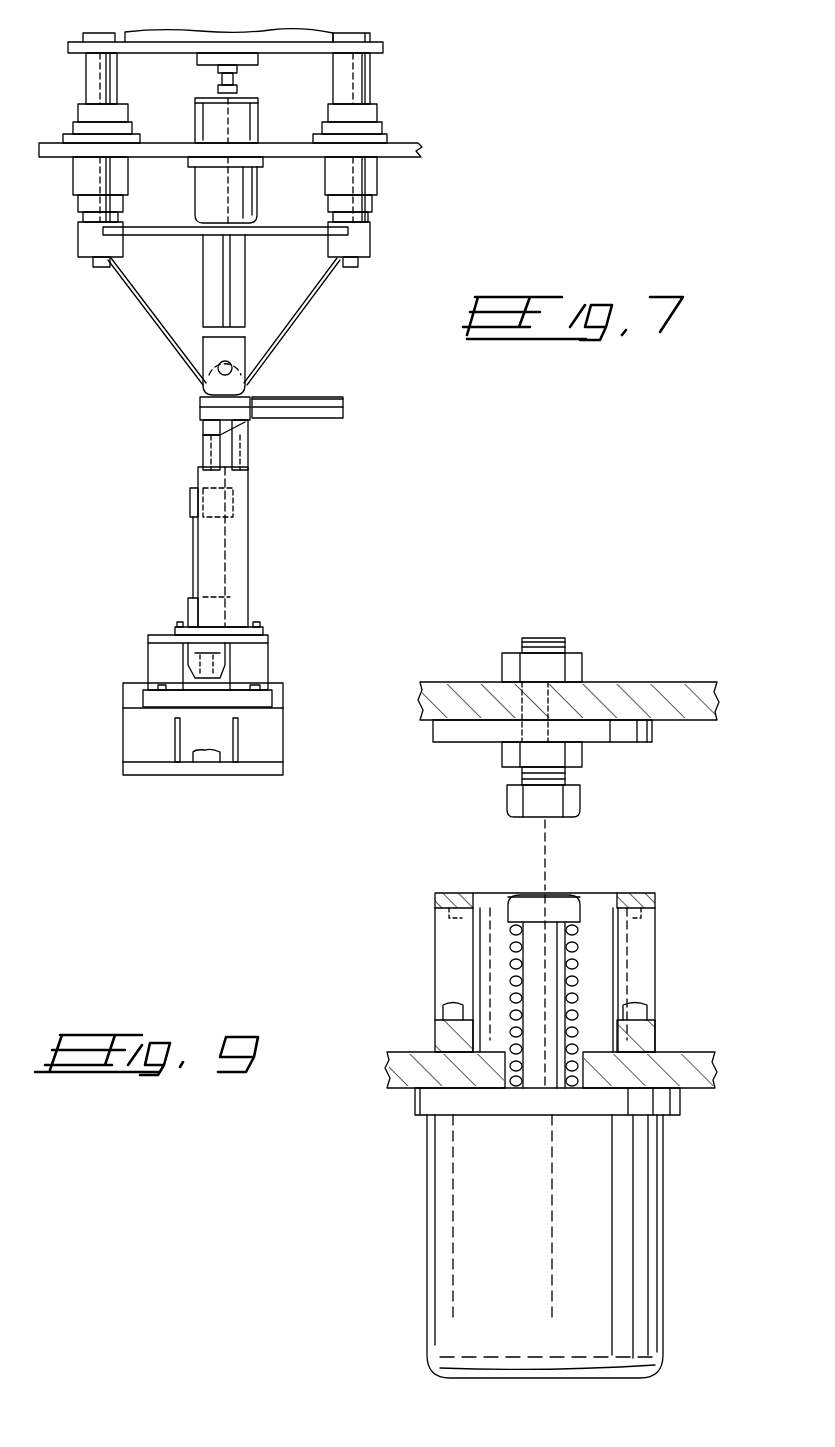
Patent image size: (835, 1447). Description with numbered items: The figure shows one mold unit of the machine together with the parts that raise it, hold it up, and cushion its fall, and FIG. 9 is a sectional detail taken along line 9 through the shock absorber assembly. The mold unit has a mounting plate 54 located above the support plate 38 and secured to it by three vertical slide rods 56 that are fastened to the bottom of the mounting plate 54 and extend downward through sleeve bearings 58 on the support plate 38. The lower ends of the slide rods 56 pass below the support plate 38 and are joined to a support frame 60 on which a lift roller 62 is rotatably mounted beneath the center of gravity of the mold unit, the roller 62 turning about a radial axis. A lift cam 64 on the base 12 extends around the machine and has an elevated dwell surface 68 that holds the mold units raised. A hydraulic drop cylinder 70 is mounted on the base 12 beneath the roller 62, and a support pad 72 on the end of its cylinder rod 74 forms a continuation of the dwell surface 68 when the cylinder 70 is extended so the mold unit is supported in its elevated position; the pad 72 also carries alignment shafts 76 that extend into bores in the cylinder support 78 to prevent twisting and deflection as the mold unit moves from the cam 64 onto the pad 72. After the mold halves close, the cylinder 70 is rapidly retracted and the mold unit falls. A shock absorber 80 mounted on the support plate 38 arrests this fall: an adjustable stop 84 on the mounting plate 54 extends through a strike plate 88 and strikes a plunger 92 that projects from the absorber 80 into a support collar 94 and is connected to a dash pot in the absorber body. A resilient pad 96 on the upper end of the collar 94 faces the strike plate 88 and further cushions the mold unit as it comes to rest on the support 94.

In FIG. 7, the section line 9— 9 is at (277, 40).
In FIG. 7, the base 12 is at (278, 727).
In FIG. 7, the support plate 38 is at (415, 145).
In FIG. 9, the support plate 38 is at (698, 1070).
In FIG. 7, the mounting plate 54 is at (385, 47).
In FIG. 9, the mounting plate 54 is at (703, 690).
In FIG. 7, the vertical slide rods 56 is at (90, 71).
In FIG. 7, the sleeve bearings 58 is at (85, 172).
In FIG. 7, the support frame 60 is at (297, 292).
In FIG. 7, the lift roller 62 is at (217, 392).
In FIG. 7, the lift cam 64 is at (355, 411).
In FIG. 7, the dwell surface 68 is at (310, 397).
In FIG. 7, the hydraulic drop cylinder 70 is at (195, 538).
In FIG. 7, the support pad 72 is at (200, 400).
In FIG. 7, the cylinder rod 74 is at (205, 453).
In FIG. 7, the alignment shafts 76 is at (243, 453).
In FIG. 7, the cylinder support 78 is at (242, 557).
In FIG. 7, the shock absorber 80 is at (205, 192).
In FIG. 9, the shock absorber 80 is at (650, 1223).
In FIG. 7, the adjustable stop 84 is at (238, 90).
In FIG. 9, the adjustable stop 84 is at (582, 800).
In FIG. 9, the strike plate 88 is at (652, 733).
In FIG. 9, the plunger 92 is at (553, 985).
In FIG. 7, the support collar 94 is at (255, 127).
In FIG. 9, the support collar 94 is at (657, 930).
In FIG. 9, the resilient pad 96 is at (652, 902).